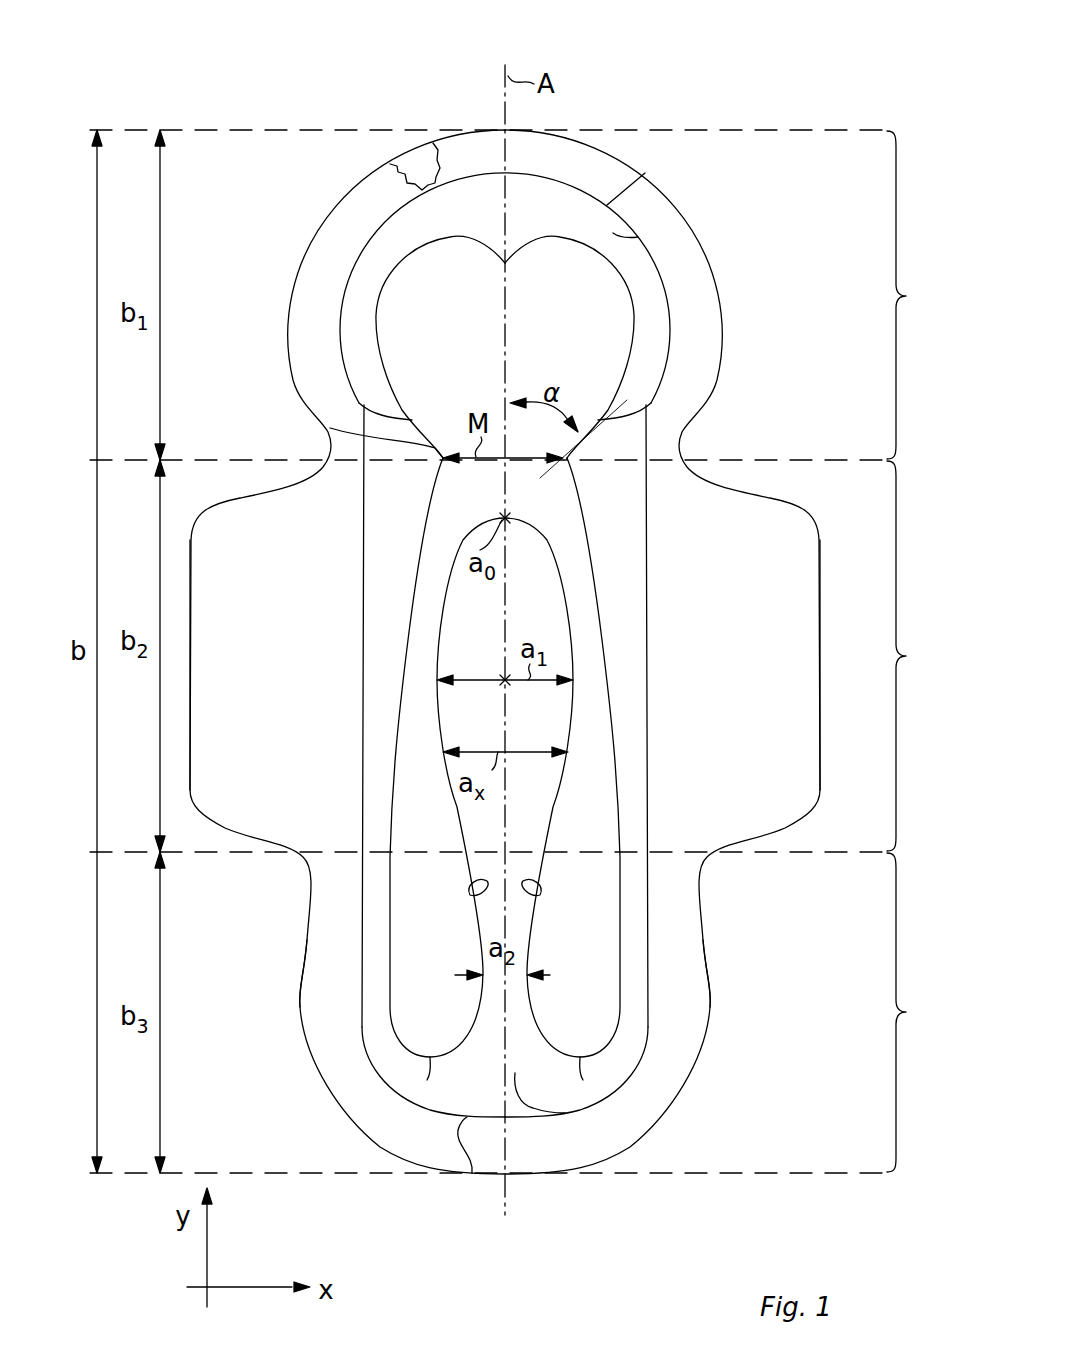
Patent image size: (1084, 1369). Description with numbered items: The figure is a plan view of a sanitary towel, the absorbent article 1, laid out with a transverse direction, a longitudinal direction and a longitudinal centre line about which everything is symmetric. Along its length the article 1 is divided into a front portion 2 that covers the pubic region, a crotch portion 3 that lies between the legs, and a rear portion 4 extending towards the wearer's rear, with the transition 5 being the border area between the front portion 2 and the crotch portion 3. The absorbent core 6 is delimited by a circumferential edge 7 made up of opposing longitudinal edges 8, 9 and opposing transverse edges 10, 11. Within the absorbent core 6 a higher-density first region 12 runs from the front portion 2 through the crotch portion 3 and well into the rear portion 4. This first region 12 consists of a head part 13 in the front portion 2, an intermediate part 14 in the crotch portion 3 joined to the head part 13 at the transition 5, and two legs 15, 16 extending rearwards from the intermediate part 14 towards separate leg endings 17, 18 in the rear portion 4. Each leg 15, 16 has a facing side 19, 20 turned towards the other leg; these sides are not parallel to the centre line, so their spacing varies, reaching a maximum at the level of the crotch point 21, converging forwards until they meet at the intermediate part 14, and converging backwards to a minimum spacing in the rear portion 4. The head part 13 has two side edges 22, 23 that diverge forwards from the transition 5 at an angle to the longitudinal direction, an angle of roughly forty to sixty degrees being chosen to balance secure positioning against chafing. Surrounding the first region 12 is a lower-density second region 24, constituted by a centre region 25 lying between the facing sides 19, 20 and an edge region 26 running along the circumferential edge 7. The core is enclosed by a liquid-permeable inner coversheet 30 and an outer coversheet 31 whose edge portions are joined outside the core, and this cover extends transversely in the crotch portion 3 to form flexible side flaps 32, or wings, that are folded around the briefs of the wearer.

The absorbent article 1 is at (196, 72).
The front portion 2 is at (912, 295).
The crotch portion 3 is at (912, 656).
The rear portion 4 is at (911, 1012).
The transition 5 is at (330, 428).
The absorbent core 6 is at (638, 237).
The circumferential edge 7 is at (387, 217).
The longitudinal edge 8 is at (362, 890).
The longitudinal edge 9 is at (650, 893).
The transverse edge 10 is at (645, 175).
The transverse edge 11 is at (472, 1173).
The first region 12 is at (528, 492).
The head part 13 is at (548, 325).
The intermediate part 14 is at (474, 490).
The leg 15 is at (410, 947).
The leg 16 is at (583, 947).
The leg ending 17 is at (427, 1080).
The leg ending 18 is at (583, 1080).
The facing side 19 is at (470, 886).
The facing side 20 is at (538, 886).
The crotch point 21 is at (508, 683).
The side edge 22 is at (362, 402).
The side edge 23 is at (592, 433).
The second region 24 is at (607, 1113).
The centre region 25 is at (528, 777).
The edge region 26 is at (386, 660).
The inner coversheet 30 is at (462, 158).
The outer coversheet 31 is at (413, 160).
The side flaps 32 is at (222, 567).